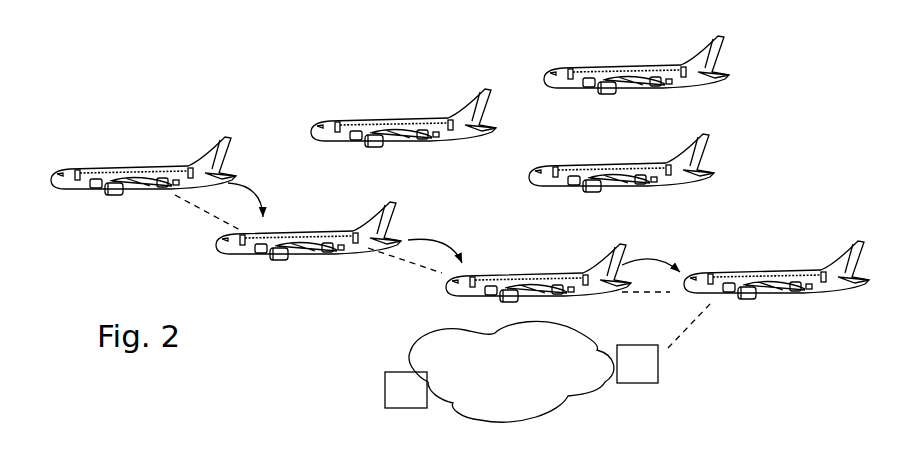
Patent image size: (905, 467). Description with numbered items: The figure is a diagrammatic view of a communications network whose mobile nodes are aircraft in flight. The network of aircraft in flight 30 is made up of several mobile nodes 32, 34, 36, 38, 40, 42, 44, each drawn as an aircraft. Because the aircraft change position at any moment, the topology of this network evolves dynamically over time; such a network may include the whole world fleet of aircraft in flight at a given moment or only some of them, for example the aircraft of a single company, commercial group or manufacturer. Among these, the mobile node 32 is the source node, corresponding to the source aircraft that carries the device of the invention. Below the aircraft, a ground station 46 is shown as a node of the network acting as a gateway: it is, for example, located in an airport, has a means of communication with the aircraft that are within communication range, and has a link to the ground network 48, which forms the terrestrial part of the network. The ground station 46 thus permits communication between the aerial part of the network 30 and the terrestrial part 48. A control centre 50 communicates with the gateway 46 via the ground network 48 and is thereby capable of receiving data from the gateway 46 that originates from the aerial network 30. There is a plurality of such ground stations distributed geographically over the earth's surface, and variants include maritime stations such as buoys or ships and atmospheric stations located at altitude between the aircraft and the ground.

The network of aircraft in flight 30 is at (268, 88).
The mobile node 32 is at (88, 150).
The mobile node 34 is at (291, 268).
The mobile node 36 is at (542, 262).
The mobile node 38 is at (787, 262).
The mobile node 40 is at (418, 112).
The mobile node 42 is at (688, 48).
The mobile node 44 is at (712, 158).
The ground station 46 is at (651, 375).
The ground network 48 is at (533, 376).
The control centre 50 is at (417, 400).